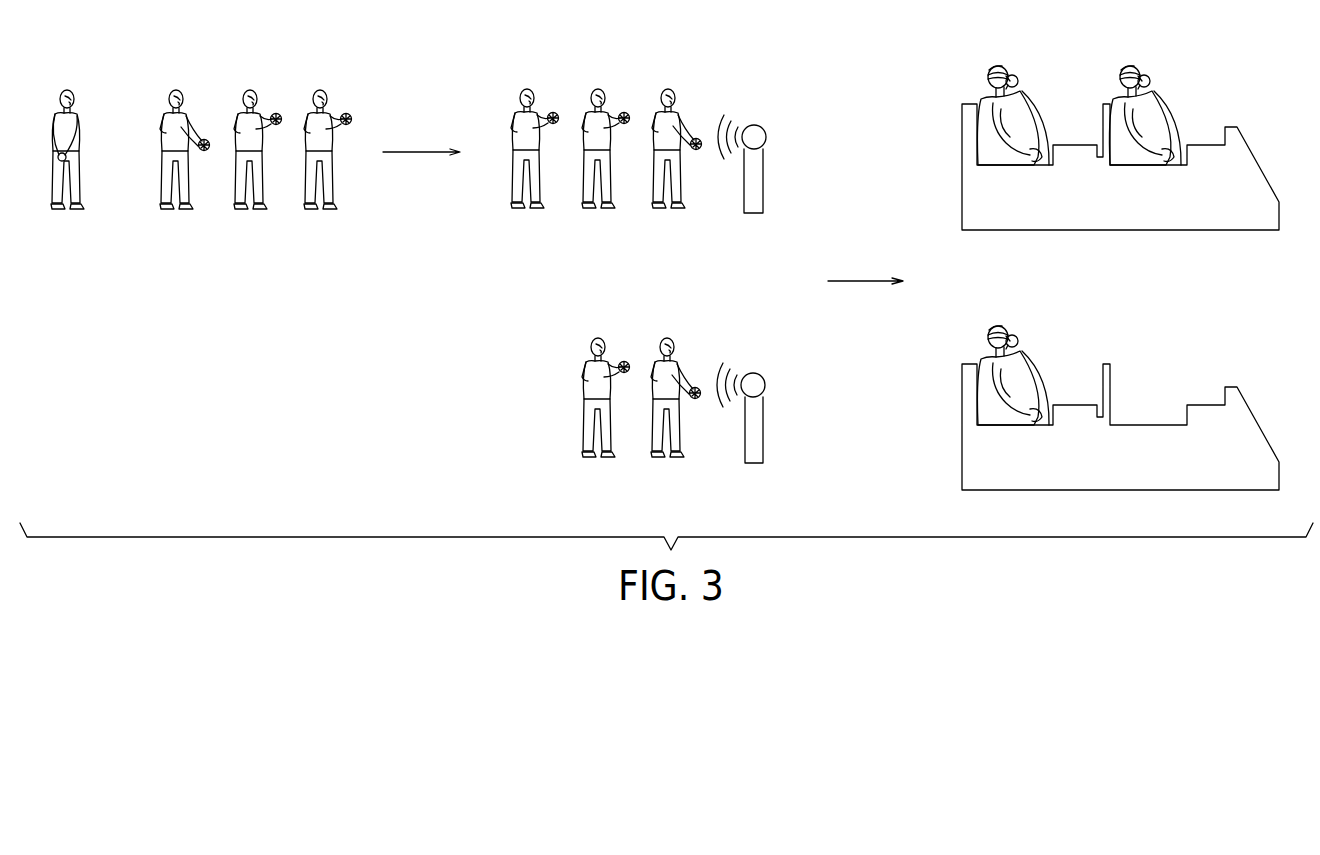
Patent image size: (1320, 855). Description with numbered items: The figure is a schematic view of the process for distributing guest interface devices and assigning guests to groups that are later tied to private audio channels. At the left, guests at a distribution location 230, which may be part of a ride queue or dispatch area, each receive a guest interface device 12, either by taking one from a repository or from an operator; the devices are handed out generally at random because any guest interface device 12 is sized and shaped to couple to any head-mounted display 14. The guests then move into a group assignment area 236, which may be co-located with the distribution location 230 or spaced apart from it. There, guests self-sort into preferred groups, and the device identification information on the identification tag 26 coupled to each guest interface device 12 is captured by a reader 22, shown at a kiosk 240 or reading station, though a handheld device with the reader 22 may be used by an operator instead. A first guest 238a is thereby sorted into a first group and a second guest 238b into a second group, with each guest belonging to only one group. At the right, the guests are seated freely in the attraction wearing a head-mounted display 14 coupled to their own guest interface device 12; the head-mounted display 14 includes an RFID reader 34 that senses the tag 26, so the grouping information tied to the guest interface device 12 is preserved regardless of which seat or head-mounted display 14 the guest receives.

The guest interface device 12 is at (206, 138).
The head-mounted display 14 is at (1024, 78).
The reader 22 is at (762, 133).
The identification tag 26 is at (207, 151).
The RFID reader 34 is at (1027, 84).
The distribution location 230 is at (355, 232).
The group assignment area 236 is at (778, 478).
The first guest 238a is at (516, 130).
The second guest 238b is at (586, 380).
The kiosk 240 is at (760, 425).